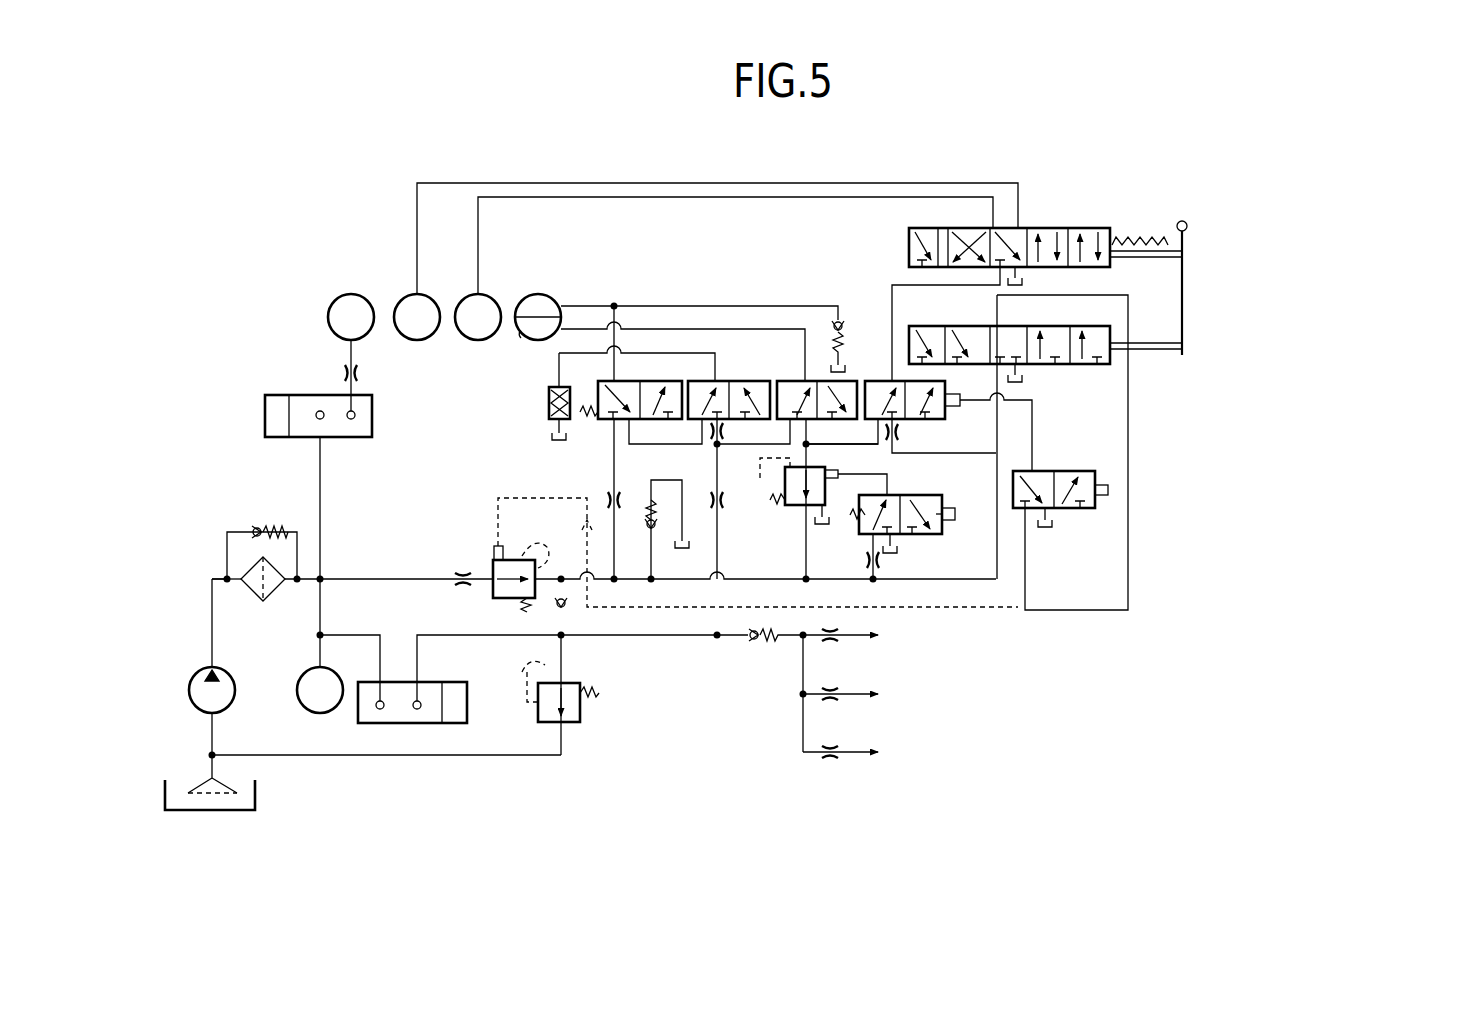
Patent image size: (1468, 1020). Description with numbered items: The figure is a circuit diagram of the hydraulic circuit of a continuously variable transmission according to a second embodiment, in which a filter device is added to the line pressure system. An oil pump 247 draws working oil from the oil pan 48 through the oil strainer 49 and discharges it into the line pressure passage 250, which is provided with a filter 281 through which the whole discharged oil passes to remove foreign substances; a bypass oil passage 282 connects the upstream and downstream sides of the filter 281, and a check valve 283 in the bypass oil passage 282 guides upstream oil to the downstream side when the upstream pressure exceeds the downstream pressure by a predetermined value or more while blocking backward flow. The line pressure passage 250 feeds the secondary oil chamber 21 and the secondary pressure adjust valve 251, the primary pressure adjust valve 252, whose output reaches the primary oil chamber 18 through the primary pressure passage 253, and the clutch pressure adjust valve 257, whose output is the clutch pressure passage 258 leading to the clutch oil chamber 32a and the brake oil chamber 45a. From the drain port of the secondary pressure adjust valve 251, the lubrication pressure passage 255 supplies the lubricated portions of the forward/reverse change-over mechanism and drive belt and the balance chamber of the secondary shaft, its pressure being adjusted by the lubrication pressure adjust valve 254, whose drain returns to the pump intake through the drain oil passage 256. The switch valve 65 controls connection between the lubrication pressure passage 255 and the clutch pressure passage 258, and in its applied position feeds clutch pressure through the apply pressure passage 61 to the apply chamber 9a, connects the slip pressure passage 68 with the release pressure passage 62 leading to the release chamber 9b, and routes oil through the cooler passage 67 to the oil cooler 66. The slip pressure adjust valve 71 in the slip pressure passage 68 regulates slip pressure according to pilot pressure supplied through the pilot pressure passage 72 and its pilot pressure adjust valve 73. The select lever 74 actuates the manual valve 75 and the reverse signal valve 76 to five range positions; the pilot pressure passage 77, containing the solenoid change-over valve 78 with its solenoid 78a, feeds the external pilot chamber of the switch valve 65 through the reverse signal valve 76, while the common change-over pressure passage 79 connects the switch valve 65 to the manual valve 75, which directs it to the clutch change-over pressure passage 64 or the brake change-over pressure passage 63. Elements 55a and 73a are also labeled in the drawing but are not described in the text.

The apply chamber 9a is at (541, 295).
The release chamber 9b is at (524, 334).
The primary oil chamber 18 is at (351, 317).
The secondary oil chamber 21 is at (320, 646).
The clutch oil chamber 32a is at (478, 317).
The brake oil chamber 45a is at (417, 317).
The oil pan 48 is at (257, 793).
The oil strainer 49 is at (205, 781).
The relief valve 55a is at (712, 448).
The apply pressure passage 61 is at (611, 304).
The release pressure passage 62 is at (690, 326).
The brake change-over pressure passage 63 is at (733, 183).
The clutch change-over pressure passage 64 is at (797, 197).
The switch valve 65 is at (745, 381).
The oil cooler 66 is at (547, 408).
The cooler passage 67 is at (697, 352).
The slip pressure passage 68 is at (835, 445).
The slip pressure adjust valve 71 is at (786, 507).
The pilot pressure passage 72 is at (890, 494).
The pilot pressure adjust valve 73 is at (912, 536).
The solenoid 73a is at (949, 522).
The select lever 74 is at (1181, 274).
The manual valve 75 is at (907, 251).
The reverse signal valve 76 is at (907, 347).
The pilot pressure passage 77 is at (1127, 402).
The solenoid change-over valve 78 is at (1011, 493).
The solenoid 78a is at (1103, 484).
The change-over pressure passage 79 is at (891, 299).
The oil pump 247 is at (233, 704).
The line pressure passage 250 is at (211, 632).
The secondary pressure adjust valve 251 is at (440, 680).
The primary pressure adjust valve 252 is at (374, 406).
The primary pressure passage 253 is at (350, 352).
The lubrication pressure adjust valve 254 is at (582, 712).
The lubrication pressure passage 255 is at (658, 637).
The drain oil passage 256 is at (532, 757).
The clutch pressure adjust valve 257 is at (490, 562).
The clutch pressure passage 258 is at (745, 576).
The filter 281 is at (257, 600).
The bypass oil passage 282 is at (226, 556).
The check valve 283 is at (263, 526).